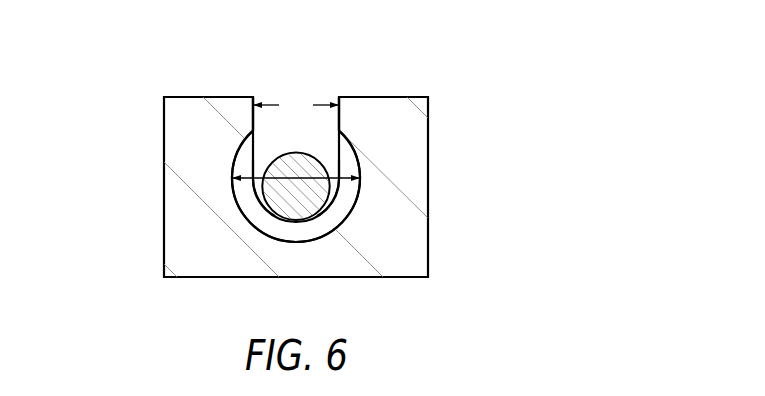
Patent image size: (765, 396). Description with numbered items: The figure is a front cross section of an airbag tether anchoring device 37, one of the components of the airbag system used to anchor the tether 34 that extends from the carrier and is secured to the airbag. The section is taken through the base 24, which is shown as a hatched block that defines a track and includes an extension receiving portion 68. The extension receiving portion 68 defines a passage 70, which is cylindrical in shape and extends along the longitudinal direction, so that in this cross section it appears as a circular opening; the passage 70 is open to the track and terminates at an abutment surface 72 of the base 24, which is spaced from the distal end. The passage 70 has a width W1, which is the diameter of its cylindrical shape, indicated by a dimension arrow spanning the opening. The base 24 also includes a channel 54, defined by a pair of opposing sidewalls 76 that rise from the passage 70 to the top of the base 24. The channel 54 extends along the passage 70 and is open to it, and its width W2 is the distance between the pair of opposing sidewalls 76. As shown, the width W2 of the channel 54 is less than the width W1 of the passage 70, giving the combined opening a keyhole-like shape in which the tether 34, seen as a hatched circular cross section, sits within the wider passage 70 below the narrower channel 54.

The base 24 is at (410, 153).
The tether 34 is at (302, 205).
The airbag tether anchoring device 37 is at (418, 52).
The channel 54 is at (275, 142).
The extension receiving portion 68 is at (237, 178).
The passage 70 is at (247, 202).
The abutment surface 72 is at (342, 205).
The opposing sidewalls 76 is at (252, 125).
The width of the passage W1 is at (294, 180).
The width of the channel W2 is at (296, 107).